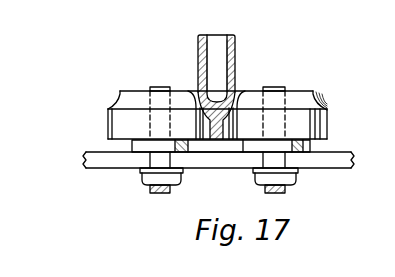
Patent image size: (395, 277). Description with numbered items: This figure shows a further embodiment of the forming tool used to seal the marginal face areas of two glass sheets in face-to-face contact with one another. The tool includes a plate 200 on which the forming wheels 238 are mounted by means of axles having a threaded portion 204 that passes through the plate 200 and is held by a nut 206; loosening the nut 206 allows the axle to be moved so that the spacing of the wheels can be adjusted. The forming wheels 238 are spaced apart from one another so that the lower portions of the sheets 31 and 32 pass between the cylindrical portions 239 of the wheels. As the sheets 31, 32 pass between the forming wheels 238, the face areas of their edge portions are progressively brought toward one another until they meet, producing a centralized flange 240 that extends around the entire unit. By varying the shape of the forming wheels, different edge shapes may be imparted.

The sheet 31 is at (237, 60).
The sheet 32 is at (198, 60).
The plate 200 is at (108, 162).
The threaded portion 204 is at (160, 194).
The nut 206 is at (143, 181).
The forming wheel 238 is at (103, 110).
The cylindrical portion 239 is at (113, 127).
The centralized flange 240 is at (217, 141).